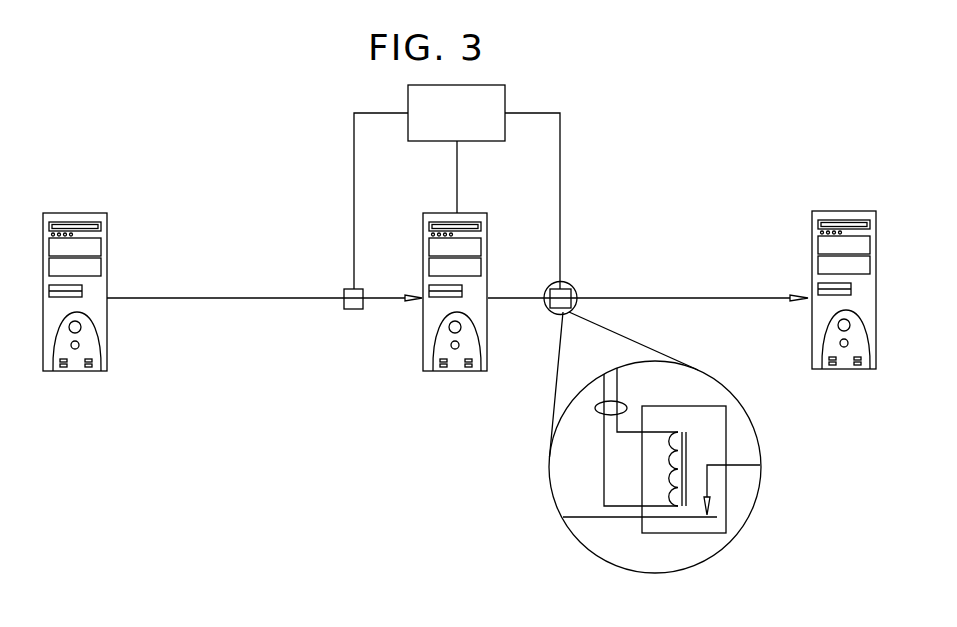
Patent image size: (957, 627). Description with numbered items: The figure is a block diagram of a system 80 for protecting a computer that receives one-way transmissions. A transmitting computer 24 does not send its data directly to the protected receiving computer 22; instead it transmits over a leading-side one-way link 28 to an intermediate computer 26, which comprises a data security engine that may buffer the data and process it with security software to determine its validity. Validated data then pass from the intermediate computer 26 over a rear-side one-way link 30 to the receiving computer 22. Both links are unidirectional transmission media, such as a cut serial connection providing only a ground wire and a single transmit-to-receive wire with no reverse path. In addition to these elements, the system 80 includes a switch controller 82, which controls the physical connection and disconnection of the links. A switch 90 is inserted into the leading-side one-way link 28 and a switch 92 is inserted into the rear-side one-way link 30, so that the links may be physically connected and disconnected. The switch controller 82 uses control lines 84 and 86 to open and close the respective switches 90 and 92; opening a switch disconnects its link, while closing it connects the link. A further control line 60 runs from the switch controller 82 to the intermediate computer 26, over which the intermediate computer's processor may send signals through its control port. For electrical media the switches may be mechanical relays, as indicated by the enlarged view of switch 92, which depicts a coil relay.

The system 80 is at (661, 197).
The switch controller 82 is at (505, 92).
The control line 84 is at (354, 172).
The control line 60 is at (457, 172).
The control line 86 is at (560, 172).
The transmitting computer 24 is at (78, 371).
The intermediate computer 26 is at (458, 371).
The receiving computer 22 is at (847, 369).
The leading-side one-way link 28 is at (222, 299).
The rear-side one-way link 30 is at (727, 299).
The switch 90 is at (350, 309).
The switch 92 is at (550, 306).